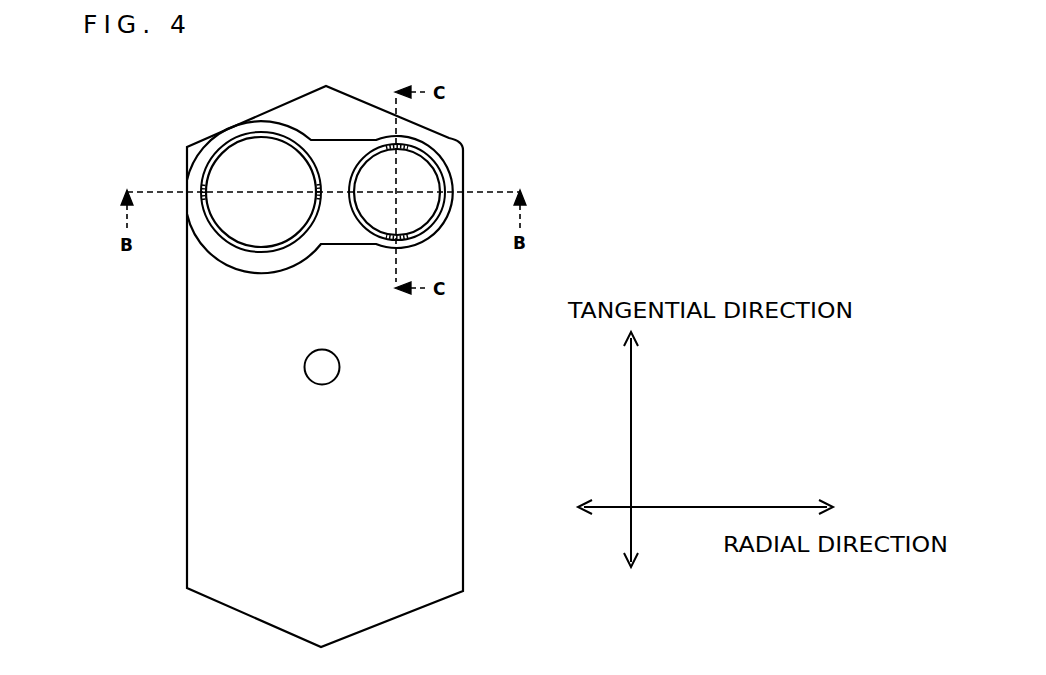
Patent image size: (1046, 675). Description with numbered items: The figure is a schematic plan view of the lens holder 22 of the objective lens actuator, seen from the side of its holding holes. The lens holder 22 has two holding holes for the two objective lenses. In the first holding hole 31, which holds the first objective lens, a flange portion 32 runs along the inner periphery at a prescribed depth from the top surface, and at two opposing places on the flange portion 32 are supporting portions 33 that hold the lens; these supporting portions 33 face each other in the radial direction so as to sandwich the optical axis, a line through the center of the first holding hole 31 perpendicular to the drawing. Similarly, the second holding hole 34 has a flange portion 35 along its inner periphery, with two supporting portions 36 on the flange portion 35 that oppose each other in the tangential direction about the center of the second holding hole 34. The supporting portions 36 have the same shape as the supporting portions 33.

The lens holder 22 is at (463, 385).
The first holding hole 31 is at (257, 238).
The flange portion 32 is at (220, 150).
The supporting portions 33 is at (319, 195).
The second holding hole 34 is at (380, 220).
The flange portion 35 is at (367, 157).
The supporting portions 36 is at (400, 232).